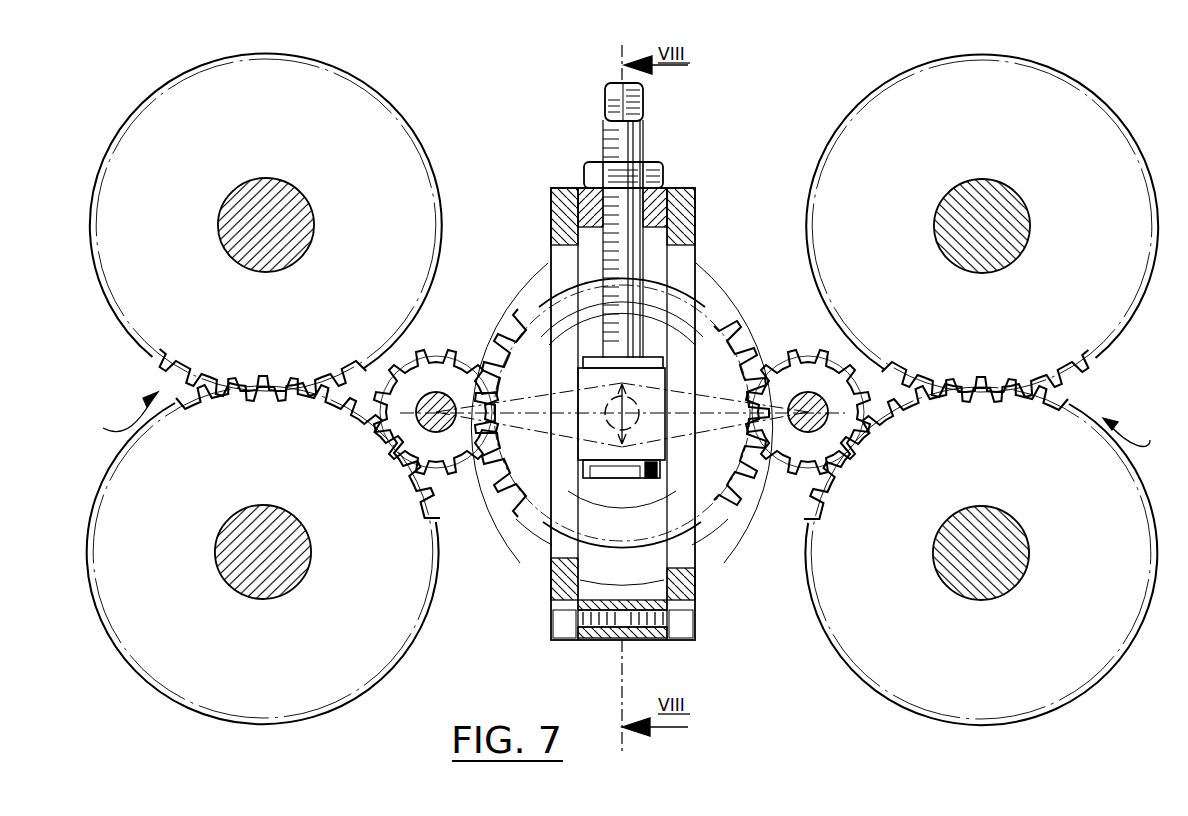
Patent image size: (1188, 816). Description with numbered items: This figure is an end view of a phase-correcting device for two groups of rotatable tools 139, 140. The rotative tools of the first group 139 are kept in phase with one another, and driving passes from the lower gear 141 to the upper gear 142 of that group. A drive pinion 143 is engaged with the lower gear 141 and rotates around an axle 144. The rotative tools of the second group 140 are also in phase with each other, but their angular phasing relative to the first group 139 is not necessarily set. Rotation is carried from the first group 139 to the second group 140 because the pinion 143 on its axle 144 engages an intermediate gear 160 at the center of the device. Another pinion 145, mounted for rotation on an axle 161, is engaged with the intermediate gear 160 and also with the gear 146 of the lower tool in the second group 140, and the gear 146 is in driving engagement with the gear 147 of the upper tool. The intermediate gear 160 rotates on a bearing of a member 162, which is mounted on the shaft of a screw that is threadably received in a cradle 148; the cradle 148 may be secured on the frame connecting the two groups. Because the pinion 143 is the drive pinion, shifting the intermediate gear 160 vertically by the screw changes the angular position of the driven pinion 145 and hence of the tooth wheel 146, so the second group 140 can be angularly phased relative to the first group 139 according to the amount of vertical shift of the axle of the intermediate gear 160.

The first group of rotatable tools 139 is at (1140, 433).
The second group of rotatable tools 140 is at (113, 412).
The lower gear 141 is at (1078, 643).
The upper gear 142 is at (1072, 293).
The pinion 143 is at (812, 470).
The axle 144 is at (806, 398).
The pinion 145 is at (453, 440).
The gear 146 is at (170, 643).
The gear 147 is at (163, 303).
The cradle 148 is at (685, 270).
The intermediate gear 160 is at (530, 508).
The axle 161 is at (432, 398).
The member 162 is at (657, 450).